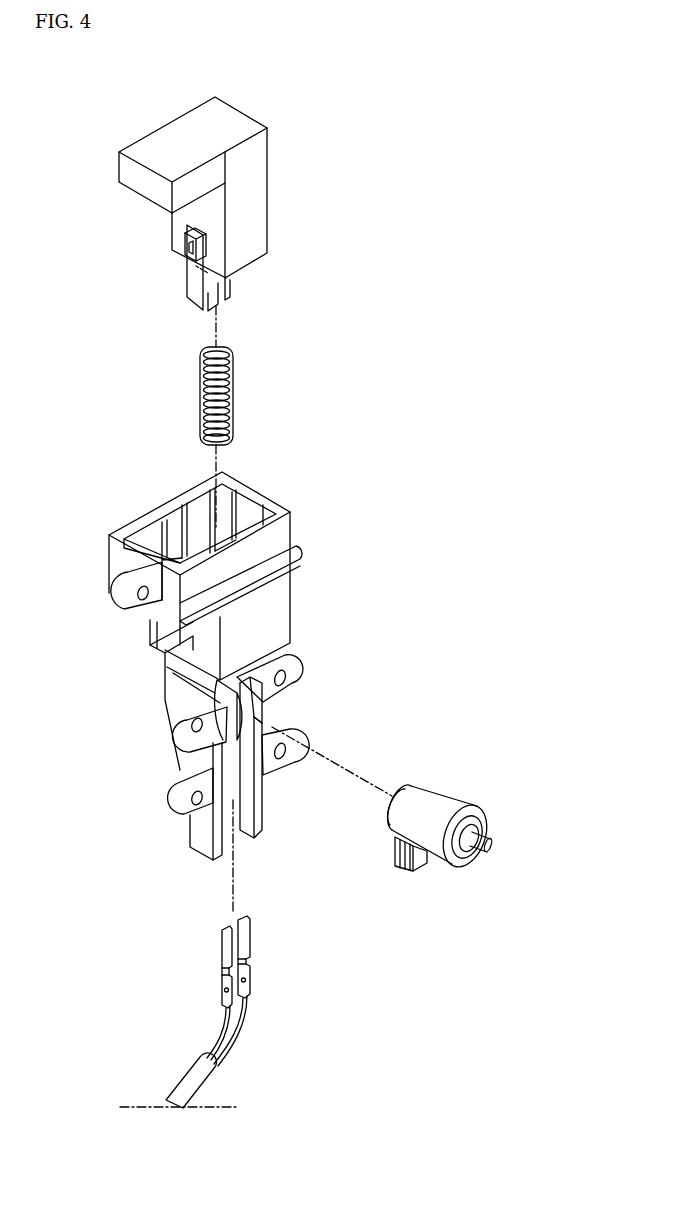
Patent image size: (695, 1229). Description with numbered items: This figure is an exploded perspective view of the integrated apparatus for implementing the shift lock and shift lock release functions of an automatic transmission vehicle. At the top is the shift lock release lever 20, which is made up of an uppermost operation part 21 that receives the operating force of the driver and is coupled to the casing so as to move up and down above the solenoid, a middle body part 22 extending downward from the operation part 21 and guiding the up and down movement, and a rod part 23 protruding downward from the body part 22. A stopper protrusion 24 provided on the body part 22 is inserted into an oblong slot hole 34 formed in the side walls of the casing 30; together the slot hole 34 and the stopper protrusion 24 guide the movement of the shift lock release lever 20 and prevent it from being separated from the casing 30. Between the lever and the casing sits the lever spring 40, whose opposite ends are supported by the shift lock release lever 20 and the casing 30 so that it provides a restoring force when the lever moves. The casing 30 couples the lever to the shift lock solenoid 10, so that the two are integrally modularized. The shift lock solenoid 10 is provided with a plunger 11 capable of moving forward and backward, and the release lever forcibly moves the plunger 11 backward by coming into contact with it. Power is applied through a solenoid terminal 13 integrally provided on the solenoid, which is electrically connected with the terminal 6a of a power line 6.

The power line 6 is at (230, 1032).
The terminal 6a is at (243, 938).
The shift lock solenoid 10 is at (440, 798).
The plunger 11 is at (488, 847).
The solenoid terminal 13 is at (417, 860).
The shift lock release lever 20 is at (272, 195).
The operation part 21 is at (172, 132).
The body part 22 is at (250, 238).
The rod part 23 is at (197, 282).
The stopper protrusion 24 is at (187, 242).
The casing 30 is at (314, 601).
The slot hole 34 is at (163, 648).
The lever spring 40 is at (233, 398).